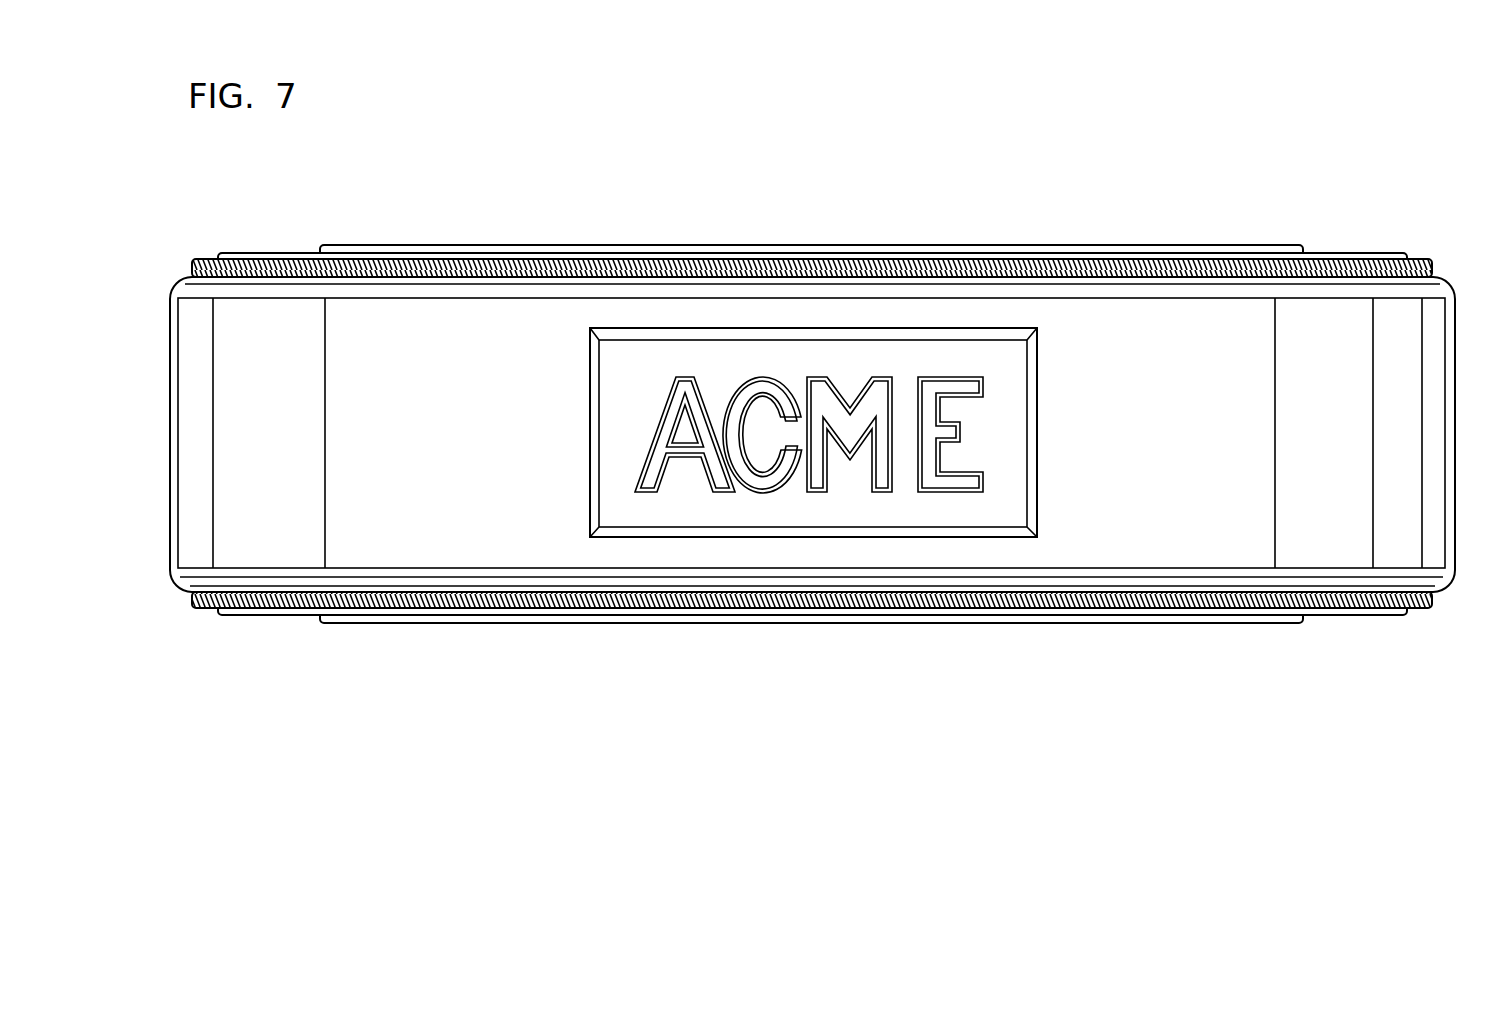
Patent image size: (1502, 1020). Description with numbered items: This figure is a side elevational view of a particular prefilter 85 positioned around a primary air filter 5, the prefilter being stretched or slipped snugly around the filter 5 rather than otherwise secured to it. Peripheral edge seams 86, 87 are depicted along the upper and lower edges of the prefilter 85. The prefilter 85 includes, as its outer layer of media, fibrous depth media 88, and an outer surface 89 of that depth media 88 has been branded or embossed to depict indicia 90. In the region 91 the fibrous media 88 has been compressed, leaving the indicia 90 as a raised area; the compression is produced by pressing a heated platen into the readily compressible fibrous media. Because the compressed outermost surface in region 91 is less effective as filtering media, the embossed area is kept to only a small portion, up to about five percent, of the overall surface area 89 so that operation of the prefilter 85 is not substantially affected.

The primary air filter 5 is at (1033, 243).
The prefilter 85 is at (1455, 352).
The peripheral edge seam 86 is at (1286, 271).
The peripheral edge seam 87 is at (1102, 600).
The fibrous depth media 88 is at (446, 311).
The outer surface 89 is at (482, 433).
The indicia 90 is at (907, 477).
The region 91 is at (692, 508).